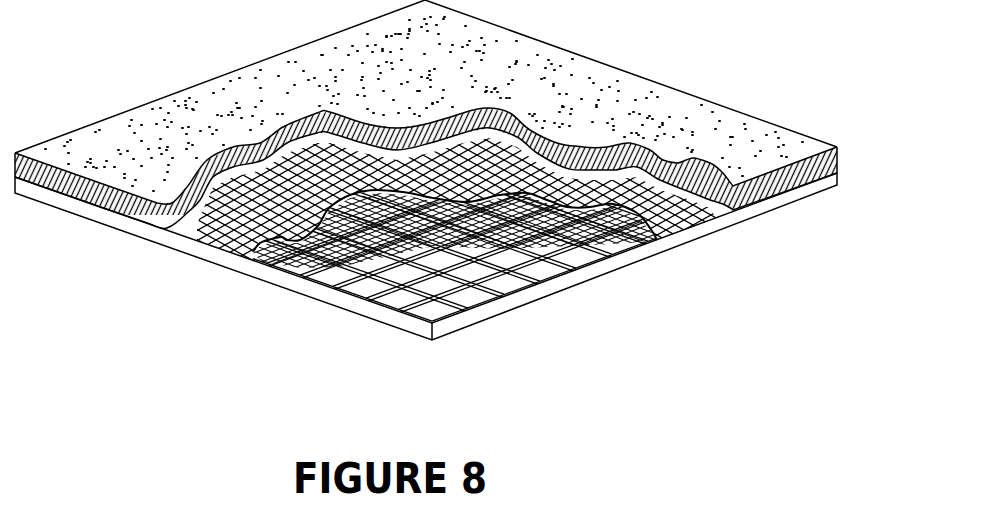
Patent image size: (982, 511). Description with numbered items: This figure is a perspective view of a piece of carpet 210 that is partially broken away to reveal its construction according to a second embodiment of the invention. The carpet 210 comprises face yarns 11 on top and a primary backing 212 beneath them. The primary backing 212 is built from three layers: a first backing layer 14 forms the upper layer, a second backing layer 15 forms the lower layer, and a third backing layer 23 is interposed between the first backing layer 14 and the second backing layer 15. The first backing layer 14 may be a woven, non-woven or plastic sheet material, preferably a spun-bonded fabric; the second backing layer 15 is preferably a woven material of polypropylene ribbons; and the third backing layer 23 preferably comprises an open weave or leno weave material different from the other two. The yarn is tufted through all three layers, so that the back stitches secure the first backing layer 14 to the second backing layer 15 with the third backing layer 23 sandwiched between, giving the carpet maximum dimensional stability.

The face yarns 11 is at (210, 100).
The first backing layer 14 is at (213, 238).
The third backing layer 23 is at (283, 265).
The second backing layer 15 is at (342, 270).
The carpet 210 is at (769, 217).
The primary backing 212 is at (593, 268).